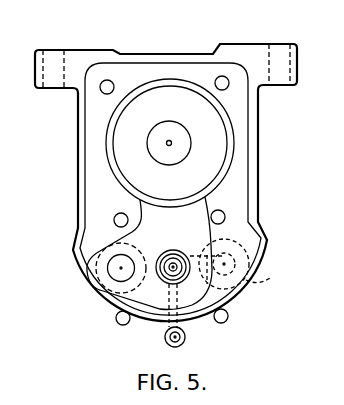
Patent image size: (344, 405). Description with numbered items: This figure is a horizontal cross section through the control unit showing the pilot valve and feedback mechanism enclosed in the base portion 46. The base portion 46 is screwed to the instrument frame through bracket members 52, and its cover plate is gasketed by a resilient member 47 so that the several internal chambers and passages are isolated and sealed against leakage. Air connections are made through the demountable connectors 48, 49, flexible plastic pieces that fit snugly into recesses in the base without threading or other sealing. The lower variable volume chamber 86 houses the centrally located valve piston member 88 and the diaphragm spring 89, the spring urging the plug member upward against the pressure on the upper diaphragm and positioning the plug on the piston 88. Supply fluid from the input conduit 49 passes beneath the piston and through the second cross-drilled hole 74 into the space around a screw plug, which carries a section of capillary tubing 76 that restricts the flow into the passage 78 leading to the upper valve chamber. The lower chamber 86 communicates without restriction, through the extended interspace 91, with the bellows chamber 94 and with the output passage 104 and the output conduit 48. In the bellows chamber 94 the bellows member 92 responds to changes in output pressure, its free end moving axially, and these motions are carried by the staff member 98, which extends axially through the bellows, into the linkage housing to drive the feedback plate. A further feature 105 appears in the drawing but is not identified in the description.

The base portion 46 is at (266, 259).
The resilient member 47 is at (240, 198).
The demountable connector 48 is at (96, 278).
The demountable connector 49 is at (270, 278).
The bracket members 52 is at (74, 56).
The second cross-drilled hole 74 is at (178, 316).
The capillary tubing 76 is at (185, 337).
The passage 78 is at (165, 337).
The lower variable volume chamber 86 is at (203, 286).
The valve piston member 88 is at (174, 264).
The diaphragm spring 89 is at (168, 257).
The extended interspace 91 is at (151, 213).
The bellows member 92 is at (189, 98).
The bellows chamber 94 is at (134, 96).
The staff member 98 is at (171, 141).
The output passage 104 is at (110, 259).
The opening 105 is at (223, 252).